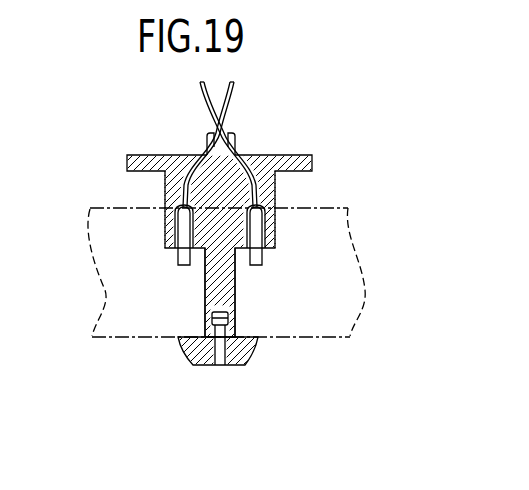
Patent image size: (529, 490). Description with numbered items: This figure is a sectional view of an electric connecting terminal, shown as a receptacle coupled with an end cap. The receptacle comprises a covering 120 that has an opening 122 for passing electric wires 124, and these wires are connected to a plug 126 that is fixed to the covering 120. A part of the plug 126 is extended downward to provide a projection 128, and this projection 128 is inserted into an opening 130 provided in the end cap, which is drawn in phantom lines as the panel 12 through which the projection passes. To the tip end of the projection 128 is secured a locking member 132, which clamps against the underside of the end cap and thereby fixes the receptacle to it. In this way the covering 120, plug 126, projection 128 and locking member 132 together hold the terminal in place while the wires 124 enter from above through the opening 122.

The panel 12 is at (138, 308).
The covering 120 is at (287, 157).
The opening 122 is at (215, 132).
The electric wires 124 is at (208, 101).
The plug 126 is at (263, 180).
The projection 128 is at (217, 278).
The opening 130 is at (203, 297).
The locking member 132 is at (193, 350).